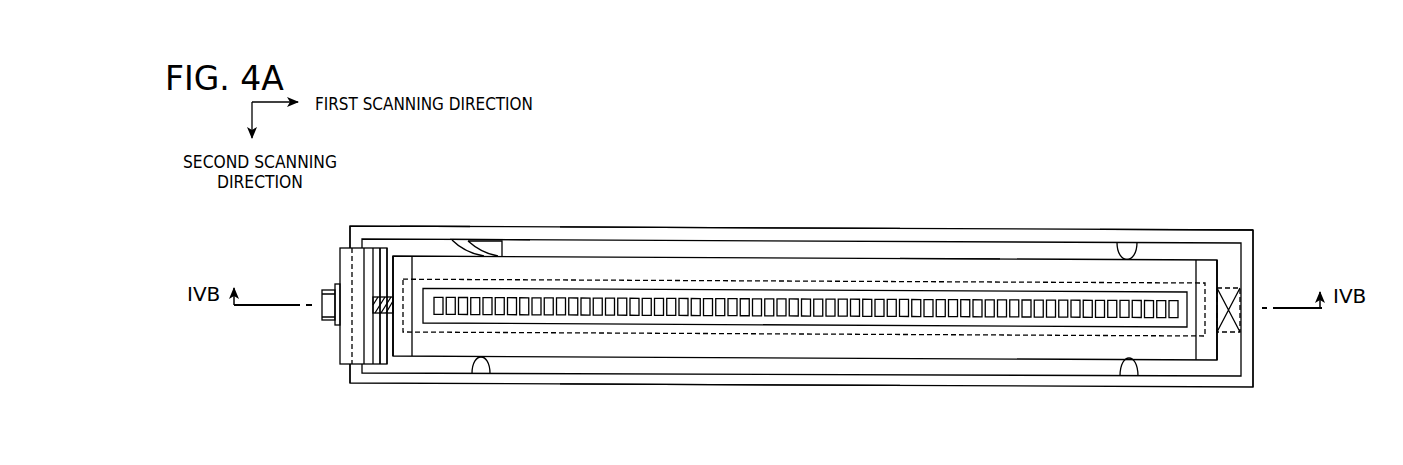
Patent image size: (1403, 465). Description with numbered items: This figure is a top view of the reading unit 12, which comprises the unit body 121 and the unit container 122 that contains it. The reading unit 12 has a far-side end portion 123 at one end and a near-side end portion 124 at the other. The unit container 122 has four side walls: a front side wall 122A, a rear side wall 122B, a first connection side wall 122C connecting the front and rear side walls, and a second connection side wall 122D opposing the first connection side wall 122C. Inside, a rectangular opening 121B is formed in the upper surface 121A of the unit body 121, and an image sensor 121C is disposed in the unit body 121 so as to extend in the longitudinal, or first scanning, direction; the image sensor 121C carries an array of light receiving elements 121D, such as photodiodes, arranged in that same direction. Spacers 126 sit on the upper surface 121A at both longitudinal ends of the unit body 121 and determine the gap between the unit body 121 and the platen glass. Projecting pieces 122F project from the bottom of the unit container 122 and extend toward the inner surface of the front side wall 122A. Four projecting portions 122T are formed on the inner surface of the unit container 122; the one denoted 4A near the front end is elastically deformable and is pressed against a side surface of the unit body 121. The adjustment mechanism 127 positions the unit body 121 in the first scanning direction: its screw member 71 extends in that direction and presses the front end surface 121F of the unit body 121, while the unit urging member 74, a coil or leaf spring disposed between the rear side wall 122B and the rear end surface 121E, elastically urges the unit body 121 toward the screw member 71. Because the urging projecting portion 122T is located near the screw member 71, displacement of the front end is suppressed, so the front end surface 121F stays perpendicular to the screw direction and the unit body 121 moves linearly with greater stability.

The reading unit 12 is at (1152, 139).
The screw member 71 is at (303, 282).
The unit urging member 74 is at (1228, 349).
The unit body 121 is at (793, 250).
The upper surface 121A is at (943, 267).
The rectangular opening 121B is at (1013, 292).
The image sensor 121C is at (1075, 283).
The light receiving elements 121D is at (730, 300).
The rear end surface 121E is at (1218, 272).
The front end surface 121F is at (393, 335).
The unit container 122 is at (873, 222).
The front side wall 122A is at (340, 240).
The rear side wall 122B is at (1266, 267).
The first connection side wall 122C is at (647, 222).
The second connection side wall 122D is at (672, 393).
The projecting pieces 122F is at (387, 253).
The projecting portions 122T is at (502, 235).
The far-side end portion 123 is at (1222, 179).
The near-side end portion 124 is at (433, 206).
The spacers 126 is at (405, 268).
The adjustment mechanism 127 is at (323, 356).
The urging projecting portion designation 4A is at (522, 246).